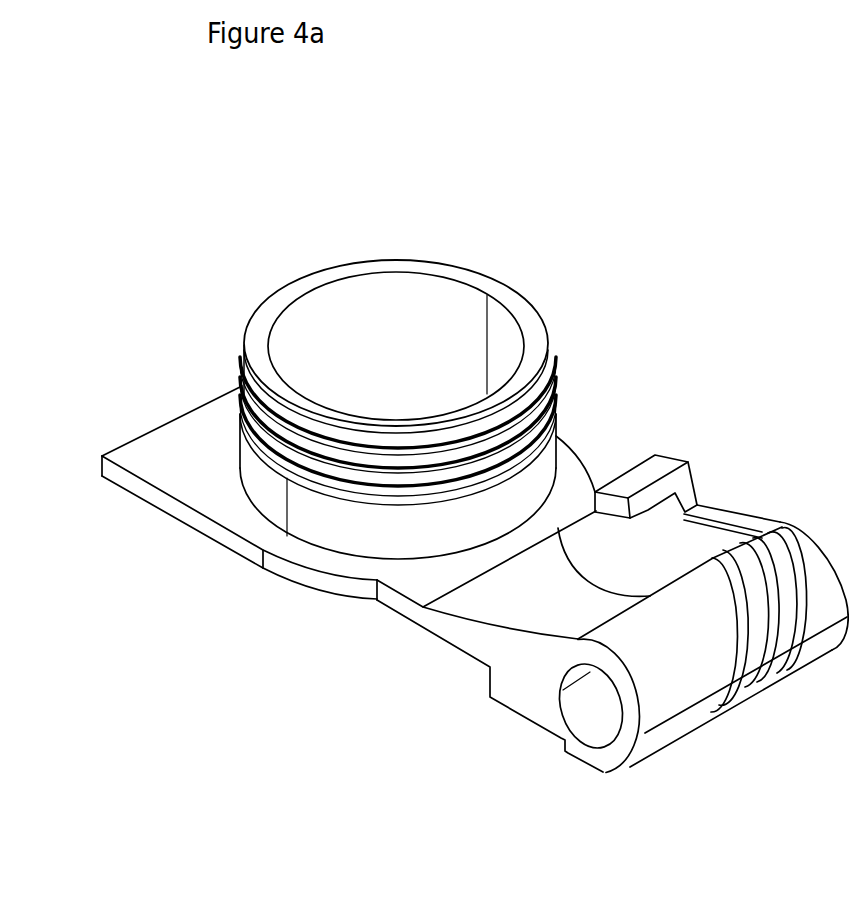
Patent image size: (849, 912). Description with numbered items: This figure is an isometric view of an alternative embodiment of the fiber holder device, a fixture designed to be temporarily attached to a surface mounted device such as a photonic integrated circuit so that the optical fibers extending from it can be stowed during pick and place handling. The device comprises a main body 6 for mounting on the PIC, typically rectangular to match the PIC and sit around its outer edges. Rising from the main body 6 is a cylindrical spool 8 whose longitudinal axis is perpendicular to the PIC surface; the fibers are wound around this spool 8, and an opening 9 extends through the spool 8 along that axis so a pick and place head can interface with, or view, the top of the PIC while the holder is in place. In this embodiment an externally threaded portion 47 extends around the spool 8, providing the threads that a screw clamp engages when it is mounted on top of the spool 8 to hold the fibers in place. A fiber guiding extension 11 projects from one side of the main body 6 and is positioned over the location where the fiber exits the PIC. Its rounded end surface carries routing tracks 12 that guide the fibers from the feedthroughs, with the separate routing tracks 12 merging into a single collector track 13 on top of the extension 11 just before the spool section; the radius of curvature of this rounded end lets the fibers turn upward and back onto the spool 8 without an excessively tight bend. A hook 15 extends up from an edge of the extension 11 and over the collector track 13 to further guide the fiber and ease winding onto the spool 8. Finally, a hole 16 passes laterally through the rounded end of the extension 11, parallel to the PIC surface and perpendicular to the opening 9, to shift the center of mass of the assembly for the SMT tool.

The main body 6 is at (213, 537).
The spool 8 is at (254, 480).
The opening 9 is at (387, 382).
The externally threaded portion 47 is at (550, 370).
The hook 15 is at (657, 455).
The collector track 13 is at (718, 545).
The routing tracks 12 is at (800, 643).
The fiber guiding extension 11 is at (665, 747).
The hole 16 is at (583, 705).